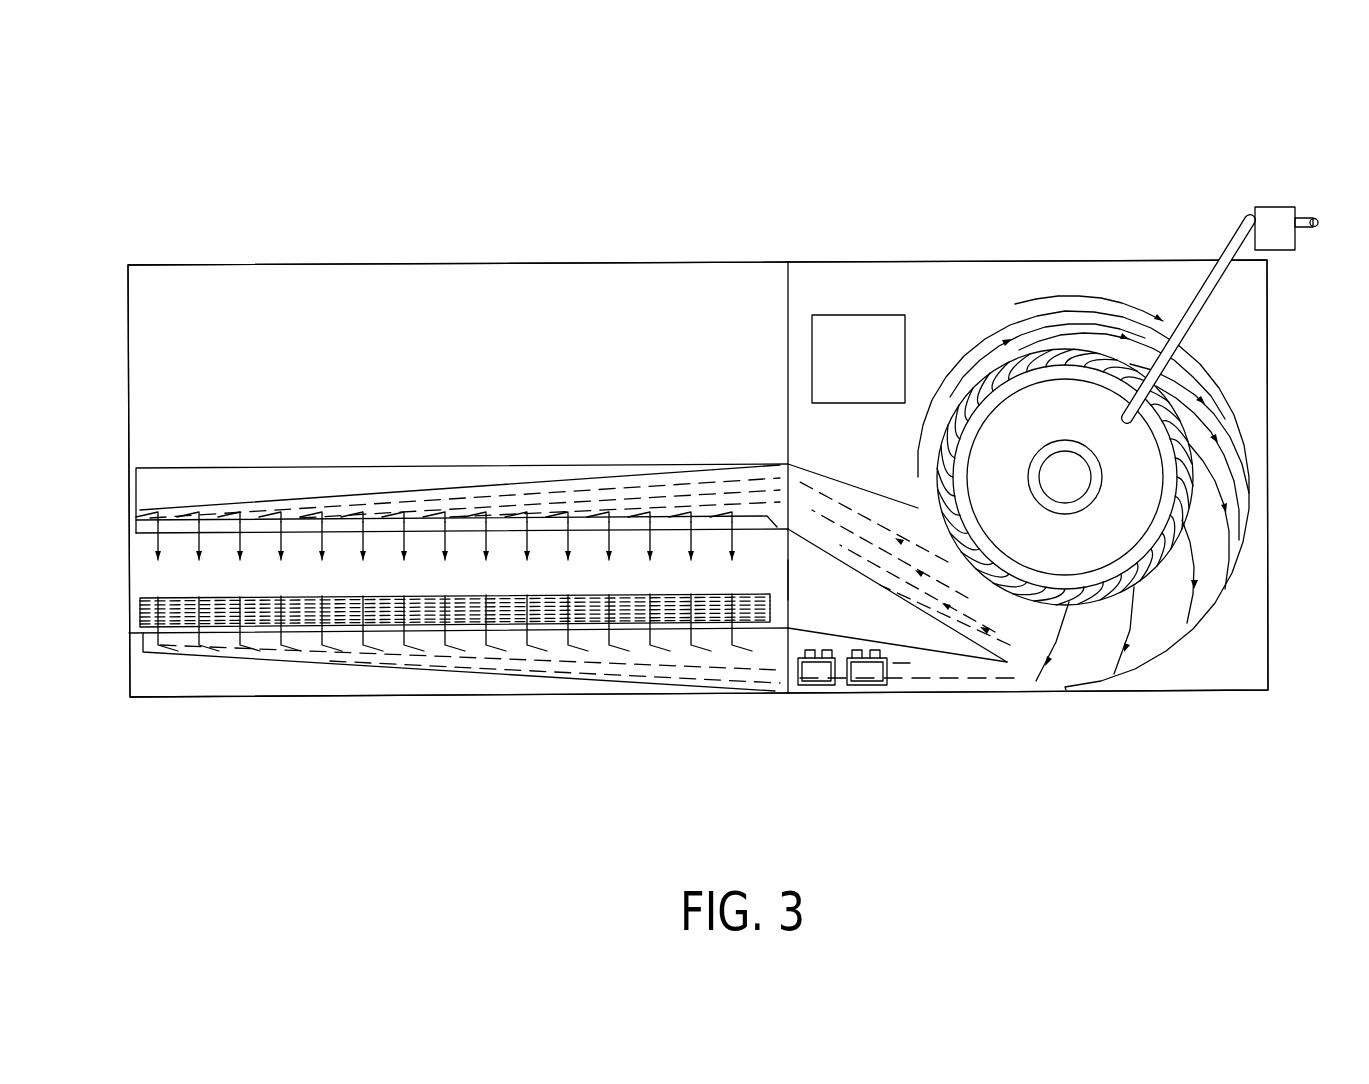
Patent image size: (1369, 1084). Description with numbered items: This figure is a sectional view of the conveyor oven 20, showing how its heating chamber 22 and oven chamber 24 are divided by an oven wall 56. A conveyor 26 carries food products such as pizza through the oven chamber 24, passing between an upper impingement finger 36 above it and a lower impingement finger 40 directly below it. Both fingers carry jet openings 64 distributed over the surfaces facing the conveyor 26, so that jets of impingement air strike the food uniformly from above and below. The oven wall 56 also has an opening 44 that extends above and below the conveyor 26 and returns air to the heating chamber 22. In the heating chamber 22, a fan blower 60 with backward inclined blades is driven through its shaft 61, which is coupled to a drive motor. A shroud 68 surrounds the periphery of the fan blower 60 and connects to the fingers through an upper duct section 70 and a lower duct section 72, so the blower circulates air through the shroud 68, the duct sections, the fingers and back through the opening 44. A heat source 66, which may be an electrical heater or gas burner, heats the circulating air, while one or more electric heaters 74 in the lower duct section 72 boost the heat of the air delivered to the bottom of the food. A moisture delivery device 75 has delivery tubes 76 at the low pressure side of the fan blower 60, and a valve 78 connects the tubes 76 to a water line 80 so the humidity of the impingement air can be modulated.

The conveyor oven 20 is at (196, 722).
The heating chamber 22 is at (958, 267).
The oven chamber 24 is at (205, 293).
The conveyor 26 is at (140, 607).
The upper impingement finger 36 is at (333, 492).
The lower impingement finger 40 is at (502, 675).
The opening 44 is at (788, 580).
The oven wall 56 is at (788, 297).
The fan blower 60 is at (988, 372).
The shaft 61 is at (1078, 486).
The jet openings 64 is at (245, 540).
The heat source 66 is at (865, 313).
The shroud 68 is at (1205, 365).
The upper duct section 70 is at (860, 490).
The lower duct section 72 is at (870, 640).
The electric heaters 74 is at (848, 690).
The moisture delivery device 75 is at (1244, 231).
The delivery tubes 76 is at (1197, 290).
The valve 78 is at (1280, 252).
The water line 80 is at (1312, 228).